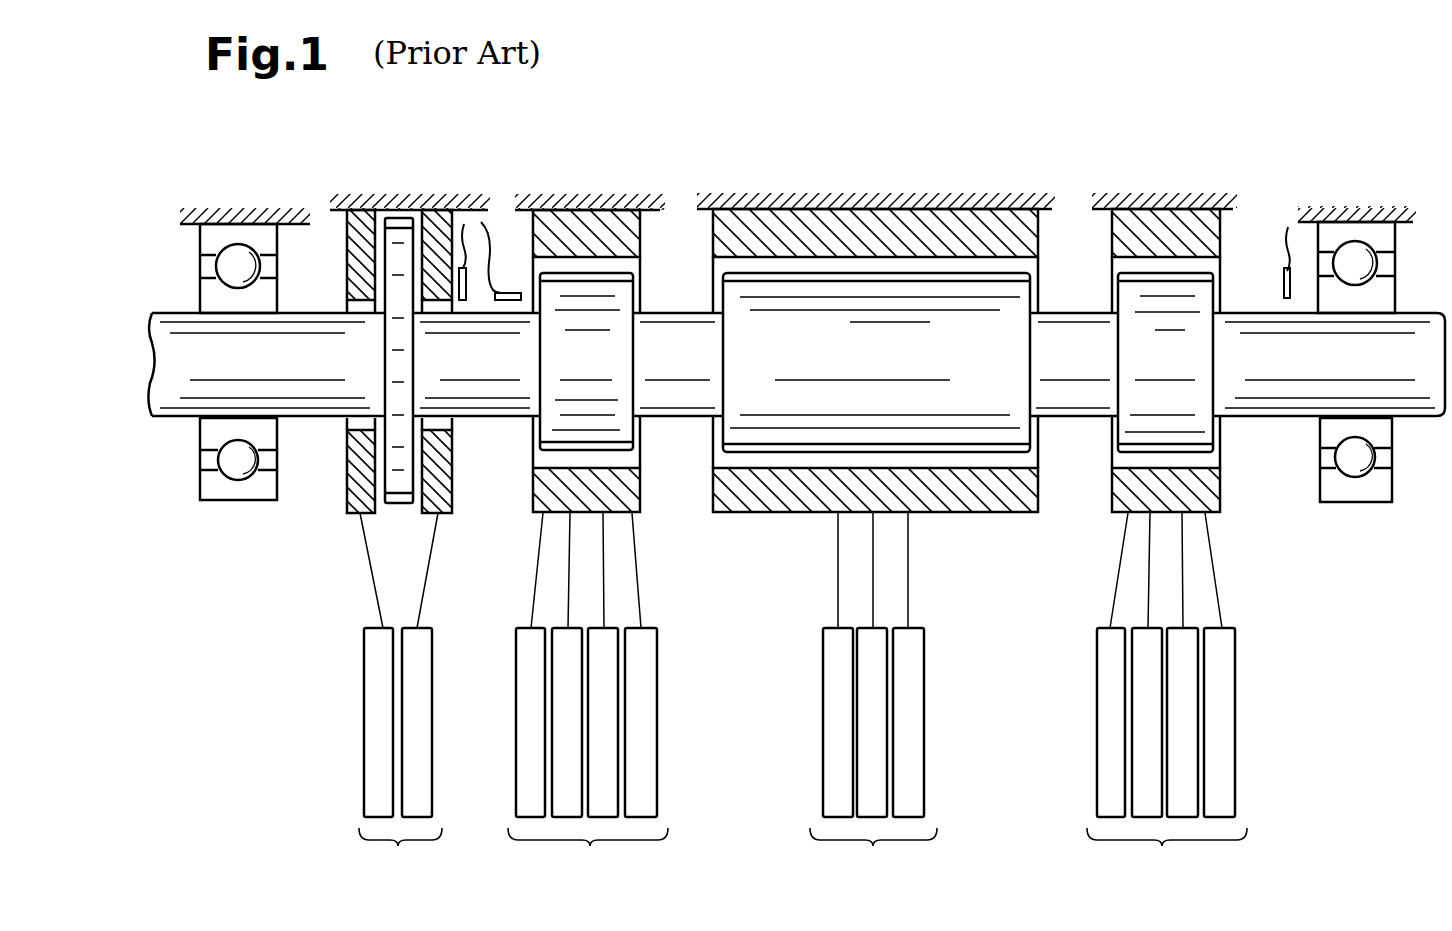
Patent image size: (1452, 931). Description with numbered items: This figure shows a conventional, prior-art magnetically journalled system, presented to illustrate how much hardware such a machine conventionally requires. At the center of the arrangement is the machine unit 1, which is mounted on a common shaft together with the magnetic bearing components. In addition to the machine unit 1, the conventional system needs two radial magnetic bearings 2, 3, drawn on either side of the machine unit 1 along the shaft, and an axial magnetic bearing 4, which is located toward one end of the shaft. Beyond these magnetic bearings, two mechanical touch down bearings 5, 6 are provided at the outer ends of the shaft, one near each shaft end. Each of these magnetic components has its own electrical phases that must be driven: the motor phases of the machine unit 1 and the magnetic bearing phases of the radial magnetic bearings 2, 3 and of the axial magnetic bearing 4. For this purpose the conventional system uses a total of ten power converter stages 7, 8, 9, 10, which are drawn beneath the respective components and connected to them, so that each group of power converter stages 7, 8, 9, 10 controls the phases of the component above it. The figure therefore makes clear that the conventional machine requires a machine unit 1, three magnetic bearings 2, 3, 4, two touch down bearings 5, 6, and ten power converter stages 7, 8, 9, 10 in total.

The machine unit 1 is at (866, 230).
The radial magnetic bearing 2 is at (580, 233).
The radial magnetic bearing 3 is at (1172, 222).
The axial magnetic bearing 4 is at (398, 240).
The mechanical touch down bearing 5 is at (240, 264).
The mechanical touch down bearing 6 is at (1354, 260).
The power converter stages 7 is at (400, 759).
The power converter stages 8 is at (588, 759).
The power converter stages 9 is at (873, 759).
The power converter stages 10 is at (1167, 759).